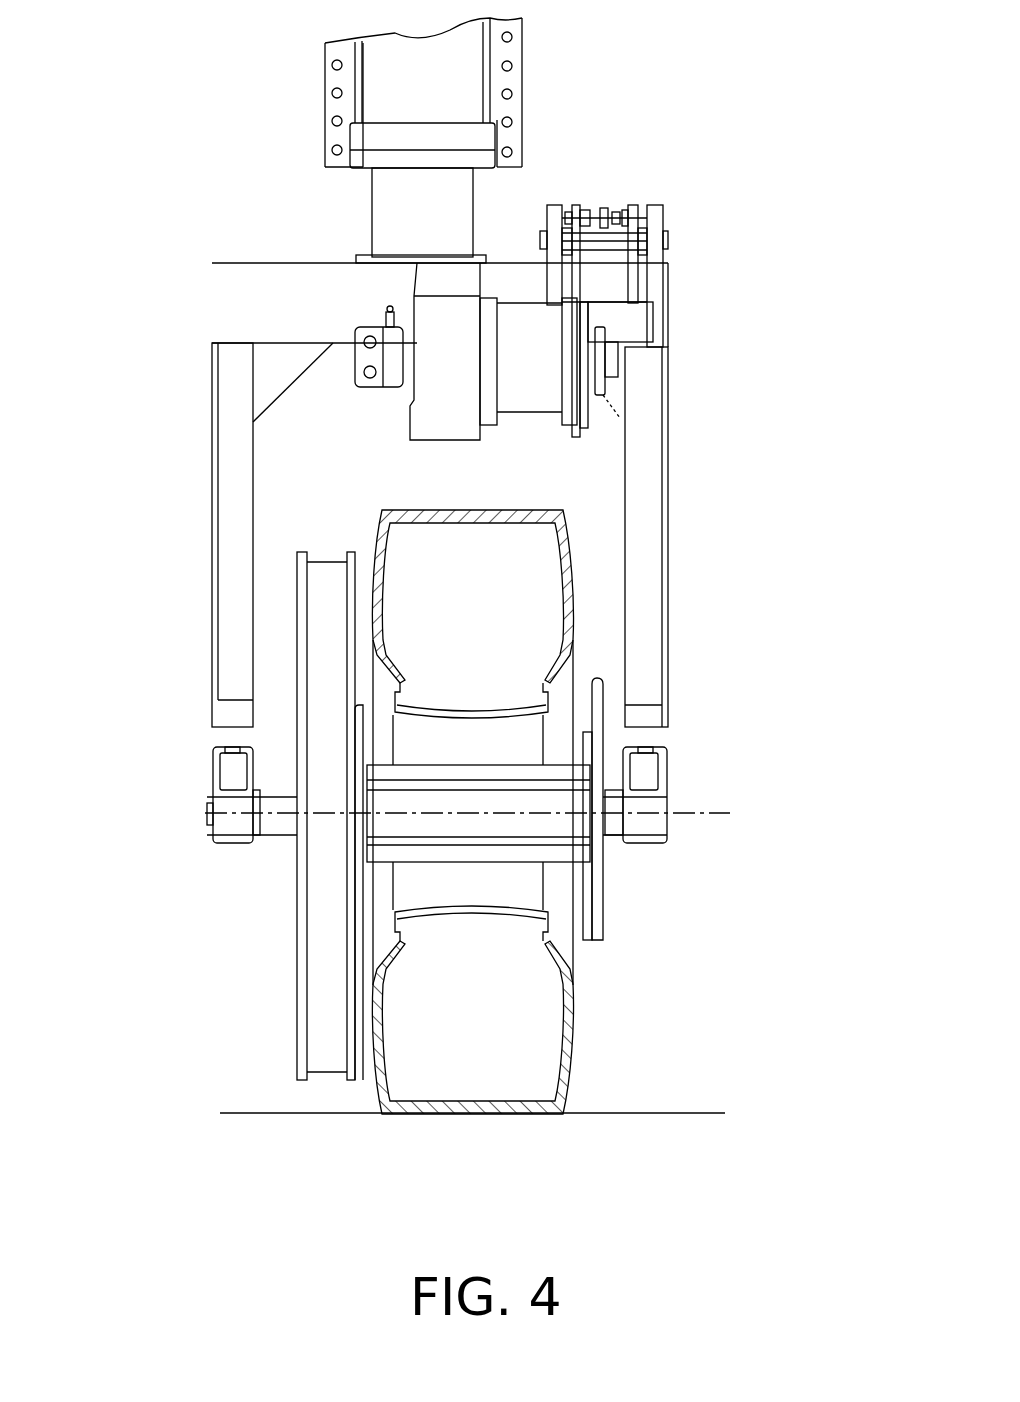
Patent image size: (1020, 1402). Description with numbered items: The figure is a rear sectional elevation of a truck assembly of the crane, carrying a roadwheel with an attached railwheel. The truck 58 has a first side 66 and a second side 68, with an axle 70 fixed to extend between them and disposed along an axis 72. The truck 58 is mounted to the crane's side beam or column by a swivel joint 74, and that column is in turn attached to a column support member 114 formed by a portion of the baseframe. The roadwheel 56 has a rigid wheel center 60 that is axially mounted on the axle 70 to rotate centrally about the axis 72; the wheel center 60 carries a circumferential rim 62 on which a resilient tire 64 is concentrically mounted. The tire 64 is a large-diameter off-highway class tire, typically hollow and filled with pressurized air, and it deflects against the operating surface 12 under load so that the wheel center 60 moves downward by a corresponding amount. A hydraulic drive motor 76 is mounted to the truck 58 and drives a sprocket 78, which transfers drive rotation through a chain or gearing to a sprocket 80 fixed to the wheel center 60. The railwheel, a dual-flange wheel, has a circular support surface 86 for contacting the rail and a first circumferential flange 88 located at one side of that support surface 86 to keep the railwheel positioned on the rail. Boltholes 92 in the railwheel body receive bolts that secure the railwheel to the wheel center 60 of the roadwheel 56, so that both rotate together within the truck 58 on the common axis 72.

The operating surface 12 is at (675, 1108).
The roadwheel 56 is at (575, 557).
The truck 58 is at (233, 520).
The rigid wheel center 60 is at (487, 882).
The circumferential rim 62 is at (402, 718).
The tire 64 is at (495, 515).
The first side 66 is at (230, 616).
The second side 68 is at (645, 612).
The axle 70 is at (540, 822).
The axis 72 is at (300, 812).
The swivel joint 74 is at (380, 200).
The hydraulic drive motor 76 is at (410, 370).
The sprocket 78 is at (605, 350).
The sprocket 80 is at (600, 737).
The circular support surface 86 is at (327, 1055).
The first circumferential flange 88 is at (297, 893).
The boltholes 92 is at (348, 1082).
The column support member 114 is at (330, 70).